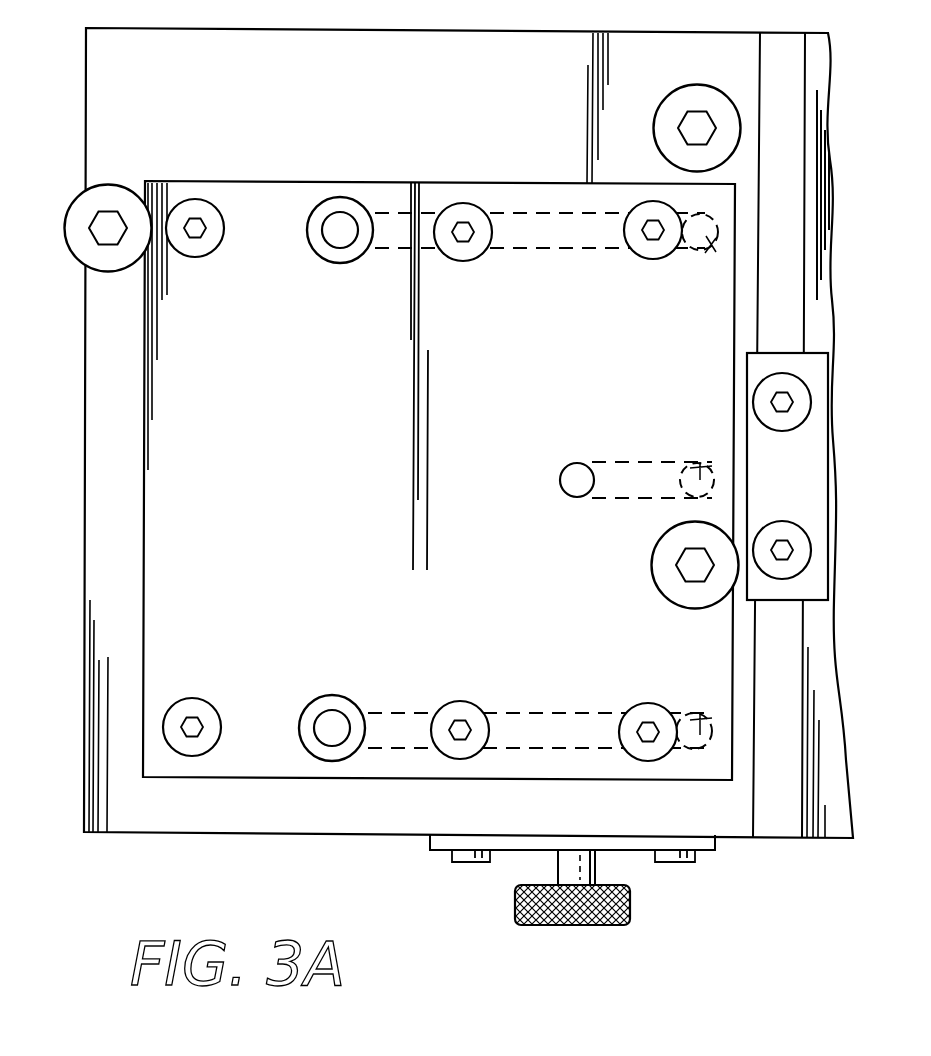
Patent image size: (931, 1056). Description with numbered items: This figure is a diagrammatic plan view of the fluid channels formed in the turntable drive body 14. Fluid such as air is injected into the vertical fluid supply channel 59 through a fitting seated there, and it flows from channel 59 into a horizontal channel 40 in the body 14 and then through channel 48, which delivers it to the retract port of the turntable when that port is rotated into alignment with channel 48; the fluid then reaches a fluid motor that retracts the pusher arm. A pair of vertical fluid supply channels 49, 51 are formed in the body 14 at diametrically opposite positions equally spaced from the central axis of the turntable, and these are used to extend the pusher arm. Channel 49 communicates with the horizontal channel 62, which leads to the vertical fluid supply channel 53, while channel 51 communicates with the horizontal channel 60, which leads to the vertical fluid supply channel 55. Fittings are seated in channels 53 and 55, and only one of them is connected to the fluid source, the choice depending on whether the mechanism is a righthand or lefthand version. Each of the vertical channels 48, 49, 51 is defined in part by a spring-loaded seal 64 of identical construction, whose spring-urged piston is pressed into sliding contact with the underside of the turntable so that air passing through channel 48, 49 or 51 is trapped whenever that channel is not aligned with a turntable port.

The body 14 is at (98, 688).
The horizontal channel 40 is at (620, 490).
The channel 48 is at (572, 466).
The vertical fluid supply channel 49 is at (338, 225).
The vertical fluid supply channel 51 is at (330, 720).
The vertical fluid supply channel 53 is at (717, 262).
The vertical fluid supply channel 55 is at (700, 715).
The vertical fluid supply channel 59 is at (708, 462).
The horizontal channel 60 is at (575, 713).
The horizontal channel 62 is at (562, 243).
The spring-loaded seal 64 is at (343, 263).